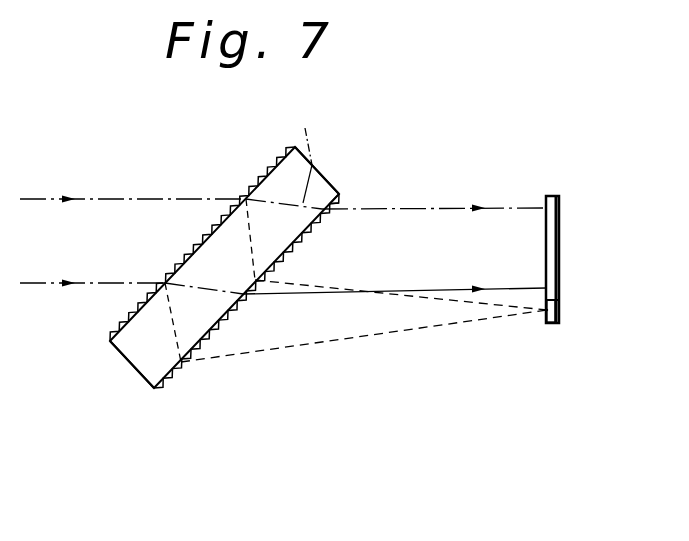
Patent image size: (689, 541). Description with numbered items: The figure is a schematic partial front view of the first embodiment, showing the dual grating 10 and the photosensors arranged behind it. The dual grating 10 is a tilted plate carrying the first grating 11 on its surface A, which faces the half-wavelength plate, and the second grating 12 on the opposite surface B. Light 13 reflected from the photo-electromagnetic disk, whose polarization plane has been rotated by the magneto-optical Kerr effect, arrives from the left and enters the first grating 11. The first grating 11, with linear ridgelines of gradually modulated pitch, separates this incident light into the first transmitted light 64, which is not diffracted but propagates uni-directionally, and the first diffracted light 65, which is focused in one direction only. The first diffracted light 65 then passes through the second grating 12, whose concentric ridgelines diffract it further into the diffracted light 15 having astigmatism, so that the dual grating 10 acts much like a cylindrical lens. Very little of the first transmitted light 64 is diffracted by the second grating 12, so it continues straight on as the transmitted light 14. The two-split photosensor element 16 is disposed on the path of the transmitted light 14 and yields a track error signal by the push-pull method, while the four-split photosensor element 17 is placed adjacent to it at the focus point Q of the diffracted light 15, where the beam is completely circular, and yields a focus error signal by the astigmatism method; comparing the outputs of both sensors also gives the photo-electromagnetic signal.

The dual grating 10 is at (320, 172).
The first grating 11 is at (128, 310).
The second grating 12 is at (216, 318).
The light 13 is at (109, 195).
The transmitted light 14 is at (500, 200).
The diffracted light 15 is at (408, 334).
The photosensor element 16 is at (560, 221).
The photosensor element 17 is at (559, 312).
The first transmitted light 64 is at (308, 147).
The first diffracted light 65 is at (173, 340).
The surface A is at (270, 154).
The surface B is at (339, 203).
The focus point Q is at (545, 312).